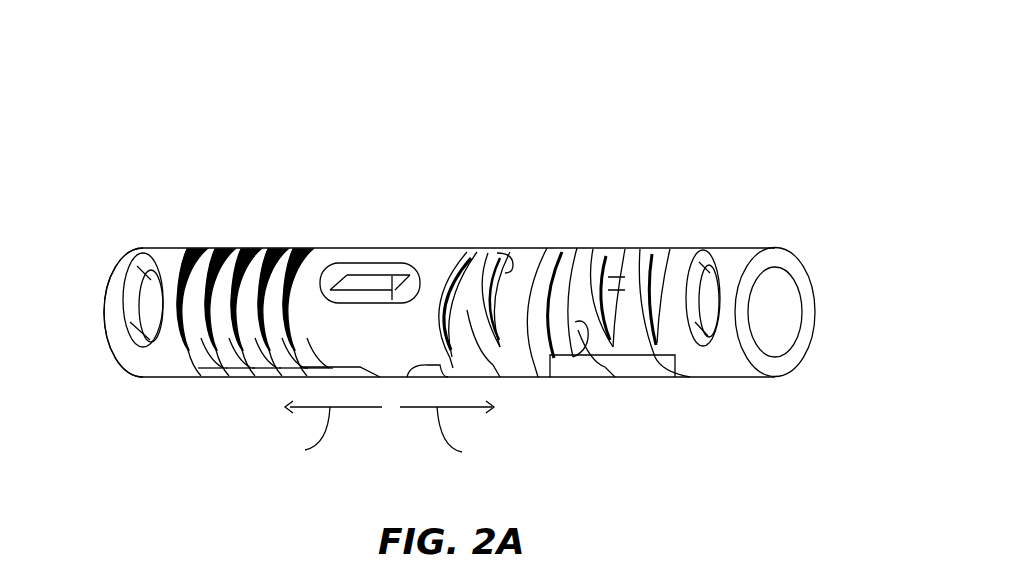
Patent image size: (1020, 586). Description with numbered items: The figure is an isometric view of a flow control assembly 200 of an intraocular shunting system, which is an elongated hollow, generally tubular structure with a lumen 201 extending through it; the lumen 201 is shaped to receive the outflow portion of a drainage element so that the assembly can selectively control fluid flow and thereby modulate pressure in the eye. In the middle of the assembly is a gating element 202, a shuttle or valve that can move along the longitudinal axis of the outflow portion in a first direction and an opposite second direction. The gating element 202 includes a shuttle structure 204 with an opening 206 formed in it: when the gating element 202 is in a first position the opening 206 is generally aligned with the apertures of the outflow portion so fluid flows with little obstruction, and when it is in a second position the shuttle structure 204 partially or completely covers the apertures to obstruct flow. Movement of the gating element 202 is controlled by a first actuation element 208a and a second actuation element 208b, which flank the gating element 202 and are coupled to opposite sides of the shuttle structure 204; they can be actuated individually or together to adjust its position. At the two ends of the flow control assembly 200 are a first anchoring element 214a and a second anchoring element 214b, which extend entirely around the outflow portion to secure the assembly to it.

The flow control assembly 200 is at (188, 96).
The lumen 201 is at (803, 312).
The gating element 202 is at (380, 205).
The shuttle structure 204 is at (428, 247).
The opening 206 is at (330, 283).
The first actuation element 208a is at (267, 348).
The second actuation element 208b is at (625, 350).
The first anchoring element 214a is at (102, 296).
The second anchoring element 214b is at (808, 275).